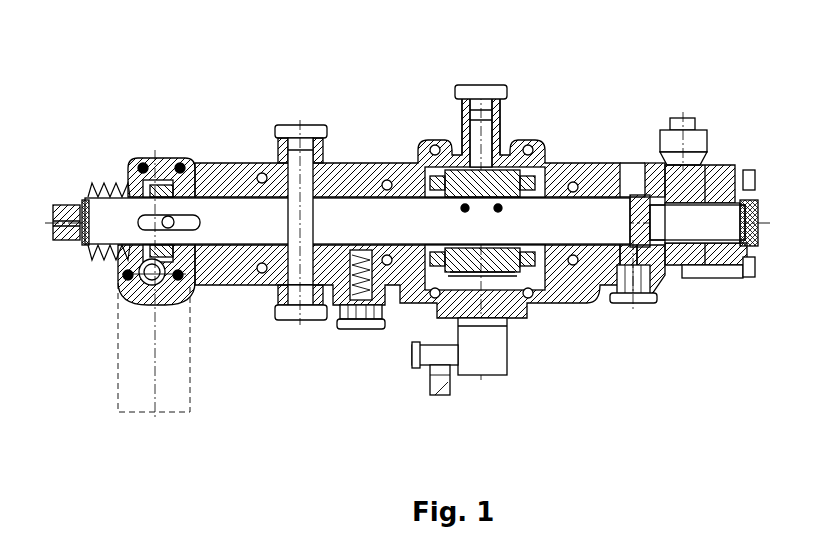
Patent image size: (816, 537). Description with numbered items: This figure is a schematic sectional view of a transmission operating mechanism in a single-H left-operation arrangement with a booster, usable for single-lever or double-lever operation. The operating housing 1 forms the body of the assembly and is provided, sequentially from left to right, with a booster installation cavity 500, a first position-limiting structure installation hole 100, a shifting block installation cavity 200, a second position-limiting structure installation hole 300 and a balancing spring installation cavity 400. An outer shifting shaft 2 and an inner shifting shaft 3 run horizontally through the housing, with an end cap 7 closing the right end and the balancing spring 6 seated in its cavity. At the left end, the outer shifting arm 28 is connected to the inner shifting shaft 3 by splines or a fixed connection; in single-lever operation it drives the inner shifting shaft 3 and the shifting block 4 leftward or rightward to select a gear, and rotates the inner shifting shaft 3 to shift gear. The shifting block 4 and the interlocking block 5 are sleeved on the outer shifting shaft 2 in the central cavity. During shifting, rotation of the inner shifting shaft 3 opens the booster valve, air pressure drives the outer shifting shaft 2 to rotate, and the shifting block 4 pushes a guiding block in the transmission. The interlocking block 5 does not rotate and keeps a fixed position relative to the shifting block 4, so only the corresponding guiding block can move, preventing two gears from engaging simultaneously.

The operating housing 1 is at (213, 163).
The outer shifting shaft 2 is at (300, 128).
The inner shifting shaft 3 is at (333, 222).
The shifting block 4 is at (478, 167).
The interlocking block 5 is at (523, 180).
The balancing spring 6 is at (662, 128).
The end cap 7 is at (745, 167).
The outer shifting arm 28 is at (76, 200).
The first position-limiting structure installation hole 100 is at (313, 320).
The shifting block installation cavity 200 is at (543, 280).
The second position-limiting structure installation hole 300 is at (655, 297).
The balancing spring installation cavity 400 is at (712, 285).
The booster installation cavity 500 is at (120, 275).